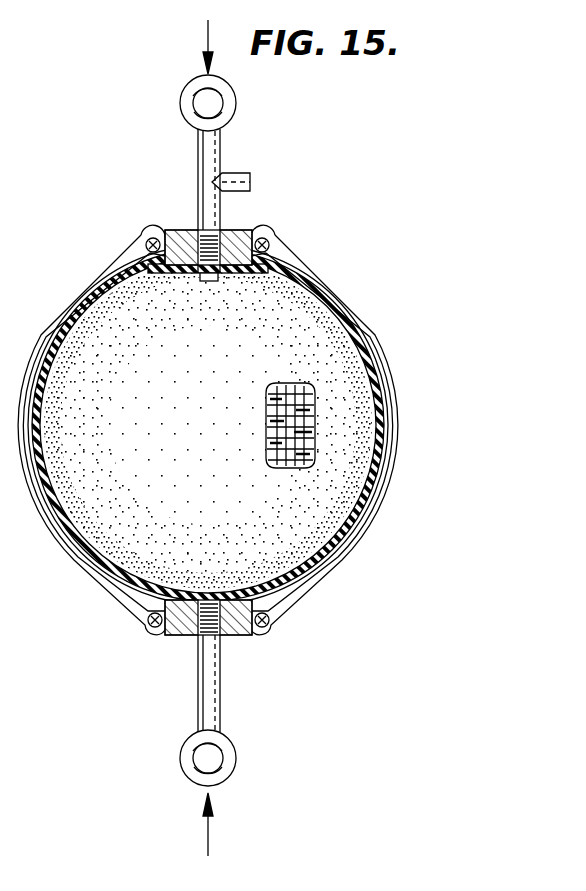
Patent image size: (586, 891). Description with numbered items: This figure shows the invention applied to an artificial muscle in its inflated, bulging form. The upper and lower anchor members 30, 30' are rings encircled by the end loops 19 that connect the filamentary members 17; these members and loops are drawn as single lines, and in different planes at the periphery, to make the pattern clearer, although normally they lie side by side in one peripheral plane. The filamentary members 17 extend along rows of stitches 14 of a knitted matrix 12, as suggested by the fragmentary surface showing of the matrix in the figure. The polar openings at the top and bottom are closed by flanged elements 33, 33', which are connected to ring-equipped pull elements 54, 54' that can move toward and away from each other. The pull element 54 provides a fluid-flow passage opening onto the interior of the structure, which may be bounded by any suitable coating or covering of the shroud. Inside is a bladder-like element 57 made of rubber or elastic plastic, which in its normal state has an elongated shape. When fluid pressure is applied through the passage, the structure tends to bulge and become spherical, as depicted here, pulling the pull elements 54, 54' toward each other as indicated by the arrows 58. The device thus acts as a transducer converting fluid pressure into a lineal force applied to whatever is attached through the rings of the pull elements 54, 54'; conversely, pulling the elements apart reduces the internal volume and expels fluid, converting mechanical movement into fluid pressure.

The knitted matrix 12 is at (340, 374).
The rows of stitches 14 is at (308, 422).
The filamentary members 17 is at (365, 323).
The end loops 19 is at (264, 238).
The upper anchor member 30 is at (239, 245).
The lower anchor member 30' is at (178, 638).
The flanged element 33 is at (200, 235).
The flanged element 33' is at (191, 645).
The pull element 54 is at (191, 174).
The pull element 54' is at (183, 695).
The bladder-like element 57 is at (42, 472).
The arrows 58 is at (207, 31).